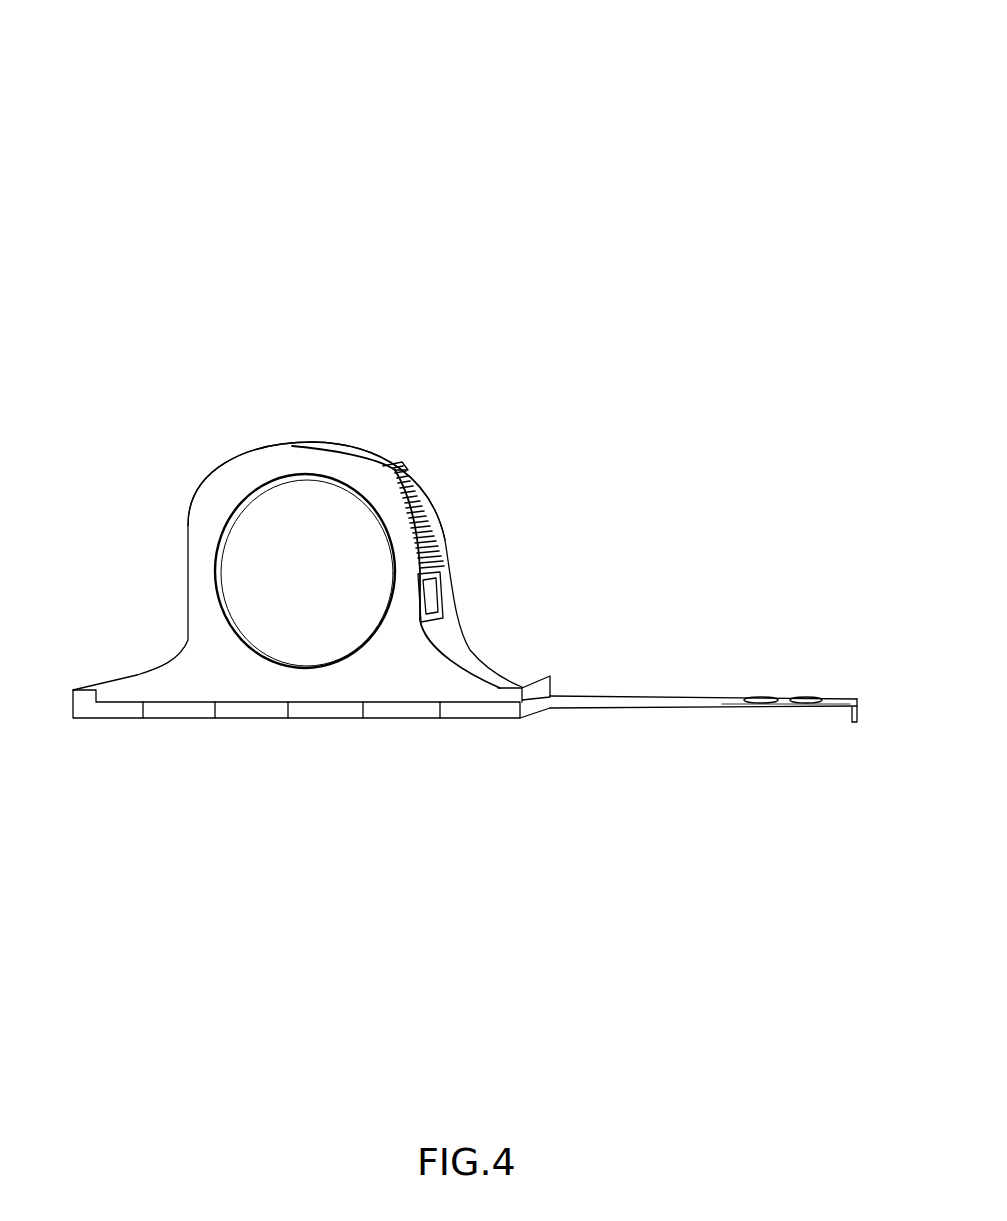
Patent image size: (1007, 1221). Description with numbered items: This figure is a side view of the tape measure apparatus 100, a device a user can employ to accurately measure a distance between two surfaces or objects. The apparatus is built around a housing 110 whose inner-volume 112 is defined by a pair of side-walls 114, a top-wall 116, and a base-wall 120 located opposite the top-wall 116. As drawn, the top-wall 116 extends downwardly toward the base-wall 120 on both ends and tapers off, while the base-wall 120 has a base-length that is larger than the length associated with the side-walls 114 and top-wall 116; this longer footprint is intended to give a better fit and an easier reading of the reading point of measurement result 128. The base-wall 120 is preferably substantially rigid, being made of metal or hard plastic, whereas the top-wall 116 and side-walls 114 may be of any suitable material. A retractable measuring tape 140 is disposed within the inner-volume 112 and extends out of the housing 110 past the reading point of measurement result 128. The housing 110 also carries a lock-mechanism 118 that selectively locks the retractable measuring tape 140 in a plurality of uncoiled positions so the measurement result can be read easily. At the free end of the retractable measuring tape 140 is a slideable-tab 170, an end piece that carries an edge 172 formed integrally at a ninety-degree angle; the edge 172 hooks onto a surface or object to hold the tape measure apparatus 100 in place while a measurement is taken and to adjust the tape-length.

The tape measure apparatus 100 is at (528, 130).
The housing 110 is at (345, 463).
The inner-volume 112 is at (247, 537).
The pair of side-walls 114 is at (212, 658).
The top-wall 116 is at (352, 447).
The lock-mechanism 118 is at (430, 492).
The base-wall 120 is at (250, 713).
The reading point of measurement result 128 is at (521, 681).
The retractable measuring tape 140 is at (620, 696).
The slideable-tab 170 is at (850, 697).
The edge 172 is at (852, 722).